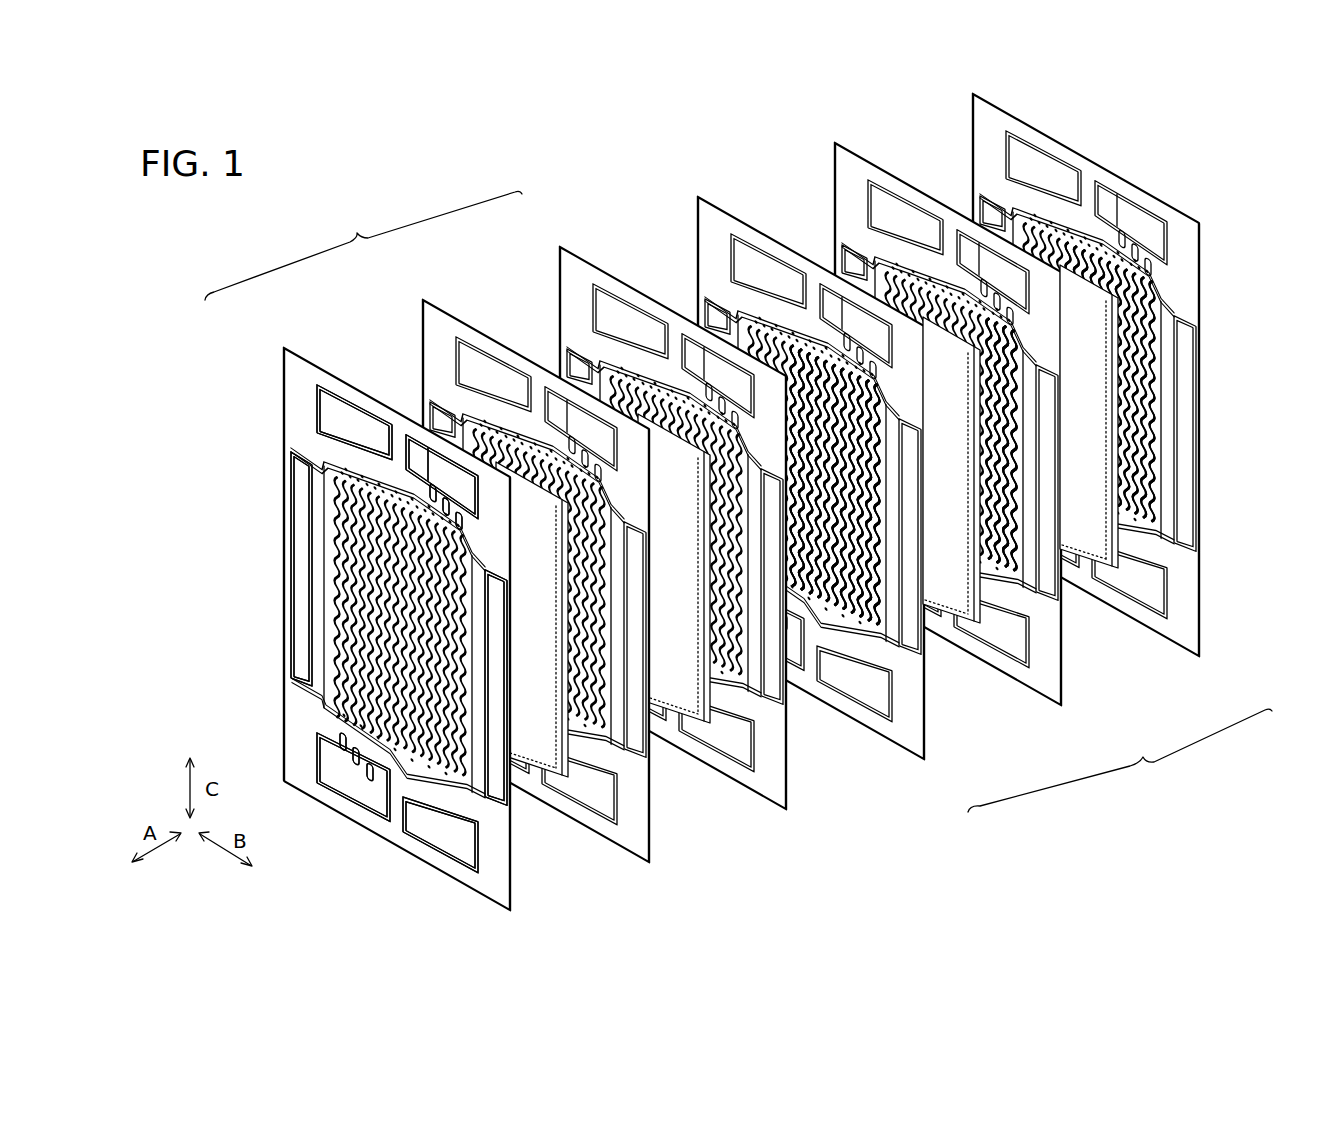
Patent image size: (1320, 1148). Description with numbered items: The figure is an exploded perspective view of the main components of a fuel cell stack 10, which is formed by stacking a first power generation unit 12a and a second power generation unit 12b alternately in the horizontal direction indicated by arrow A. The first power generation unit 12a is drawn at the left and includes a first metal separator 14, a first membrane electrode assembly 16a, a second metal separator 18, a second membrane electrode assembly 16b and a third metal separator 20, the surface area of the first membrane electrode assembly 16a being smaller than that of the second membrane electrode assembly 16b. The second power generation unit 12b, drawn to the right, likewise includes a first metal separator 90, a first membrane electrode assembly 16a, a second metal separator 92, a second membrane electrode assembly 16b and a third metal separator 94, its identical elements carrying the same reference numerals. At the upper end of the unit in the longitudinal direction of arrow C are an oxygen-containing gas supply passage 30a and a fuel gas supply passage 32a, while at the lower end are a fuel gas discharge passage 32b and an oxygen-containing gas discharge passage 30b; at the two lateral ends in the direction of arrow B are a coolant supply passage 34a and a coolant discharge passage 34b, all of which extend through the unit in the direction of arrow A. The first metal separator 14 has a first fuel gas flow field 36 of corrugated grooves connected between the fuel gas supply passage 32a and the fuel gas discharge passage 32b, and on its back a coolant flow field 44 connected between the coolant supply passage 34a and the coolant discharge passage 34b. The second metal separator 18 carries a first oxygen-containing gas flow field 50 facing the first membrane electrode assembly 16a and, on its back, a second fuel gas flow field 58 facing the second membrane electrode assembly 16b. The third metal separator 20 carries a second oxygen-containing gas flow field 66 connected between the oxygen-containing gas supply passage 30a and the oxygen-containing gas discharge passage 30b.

The fuel cell stack 10 is at (283, 181).
The first power generation unit 12a is at (363, 245).
The second power generation unit 12b is at (1120, 760).
The first metal separator 14 is at (559, 246).
The first membrane electrode assembly 16a is at (674, 704).
The second membrane electrode assembly 16b is at (538, 738).
The second metal separator 18 is at (422, 298).
The third metal separator 20 is at (283, 346).
The oxygen-containing gas supply passage 30a is at (470, 492).
The oxygen-containing gas discharge passage 30b is at (343, 770).
The fuel gas supply passage 32a is at (335, 413).
The fuel gas discharge passage 32b is at (420, 832).
The coolant supply passage 34a is at (300, 512).
The coolant discharge passage 34b is at (497, 673).
The first fuel gas flow field 36 is at (1140, 504).
The coolant flow field 44 is at (862, 523).
The first oxygen-containing gas flow field 50 is at (1010, 441).
The second fuel gas flow field 58 is at (1005, 472).
The second oxygen-containing gas flow field 66 is at (872, 468).
The first metal separator 90 is at (1201, 658).
The second metal separator 92 is at (1061, 711).
The third metal separator 94 is at (924, 761).